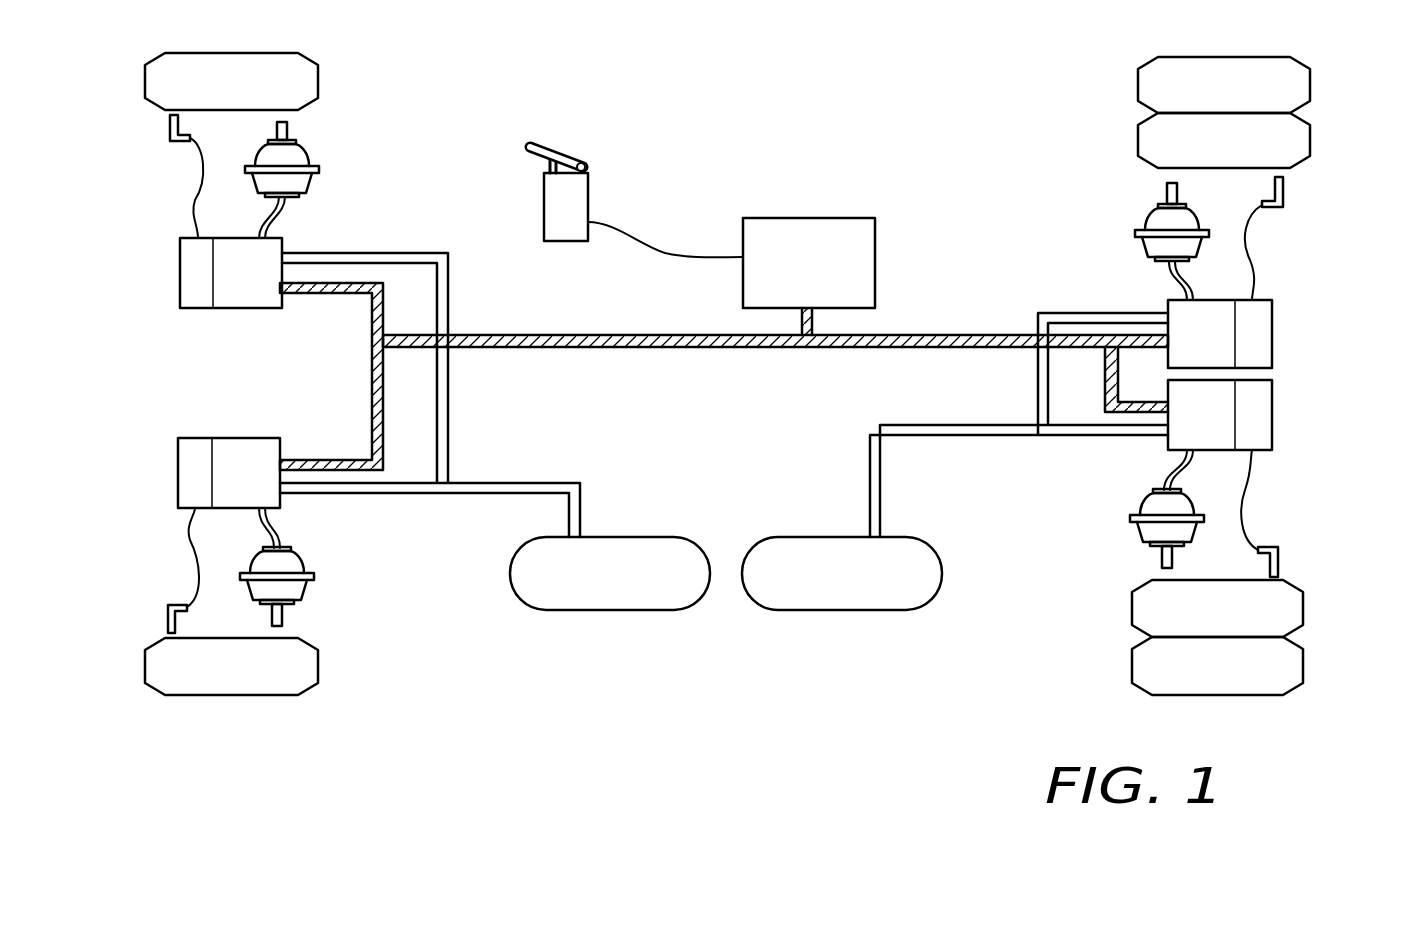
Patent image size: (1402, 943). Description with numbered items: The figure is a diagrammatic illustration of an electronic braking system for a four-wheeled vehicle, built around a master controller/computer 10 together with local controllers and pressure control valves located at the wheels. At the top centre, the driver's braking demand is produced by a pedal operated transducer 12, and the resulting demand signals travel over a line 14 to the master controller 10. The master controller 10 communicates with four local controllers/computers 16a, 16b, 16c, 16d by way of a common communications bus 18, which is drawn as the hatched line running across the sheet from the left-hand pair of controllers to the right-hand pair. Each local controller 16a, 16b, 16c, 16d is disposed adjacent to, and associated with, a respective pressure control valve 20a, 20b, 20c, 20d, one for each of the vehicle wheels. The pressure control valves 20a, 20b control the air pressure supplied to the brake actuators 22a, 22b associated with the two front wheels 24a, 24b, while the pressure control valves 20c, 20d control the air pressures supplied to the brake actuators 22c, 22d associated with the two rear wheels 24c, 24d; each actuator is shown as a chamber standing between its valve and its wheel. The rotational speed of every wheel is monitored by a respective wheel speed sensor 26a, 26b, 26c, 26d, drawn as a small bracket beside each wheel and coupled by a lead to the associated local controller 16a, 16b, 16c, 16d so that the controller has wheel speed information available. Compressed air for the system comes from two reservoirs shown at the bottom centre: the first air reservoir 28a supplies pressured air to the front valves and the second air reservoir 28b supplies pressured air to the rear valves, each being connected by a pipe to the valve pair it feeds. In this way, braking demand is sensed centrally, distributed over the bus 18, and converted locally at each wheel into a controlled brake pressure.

The master controller/computer 10 is at (867, 247).
The pedal operated transducer 12 is at (545, 205).
The line 14 is at (680, 255).
The local controller/computer 16a is at (180, 264).
The local controller/computer 16b is at (178, 470).
The local controller/computer 16c is at (1262, 337).
The local controller/computer 16d is at (1262, 415).
The common communications bus 18 is at (855, 347).
The pressure control valve 20a is at (270, 300).
The pressure control valve 20b is at (263, 440).
The pressure control valve 20c is at (1217, 305).
The pressure control valve 20d is at (1215, 450).
The brake actuator 22a is at (295, 158).
The brake actuator 22b is at (295, 565).
The brake actuator 22c is at (1153, 217).
The brake actuator 22d is at (1145, 532).
The front wheel 24a is at (308, 82).
The front wheel 24b is at (305, 667).
The rear wheel 24c is at (1312, 115).
The rear wheel 24d is at (1303, 640).
The wheel speed sensor 26a is at (165, 117).
The wheel speed sensor 26b is at (166, 620).
The wheel speed sensor 26c is at (1285, 187).
The wheel speed sensor 26d is at (1280, 565).
The first air reservoir 28a is at (625, 600).
The second air reservoir 28b is at (852, 600).